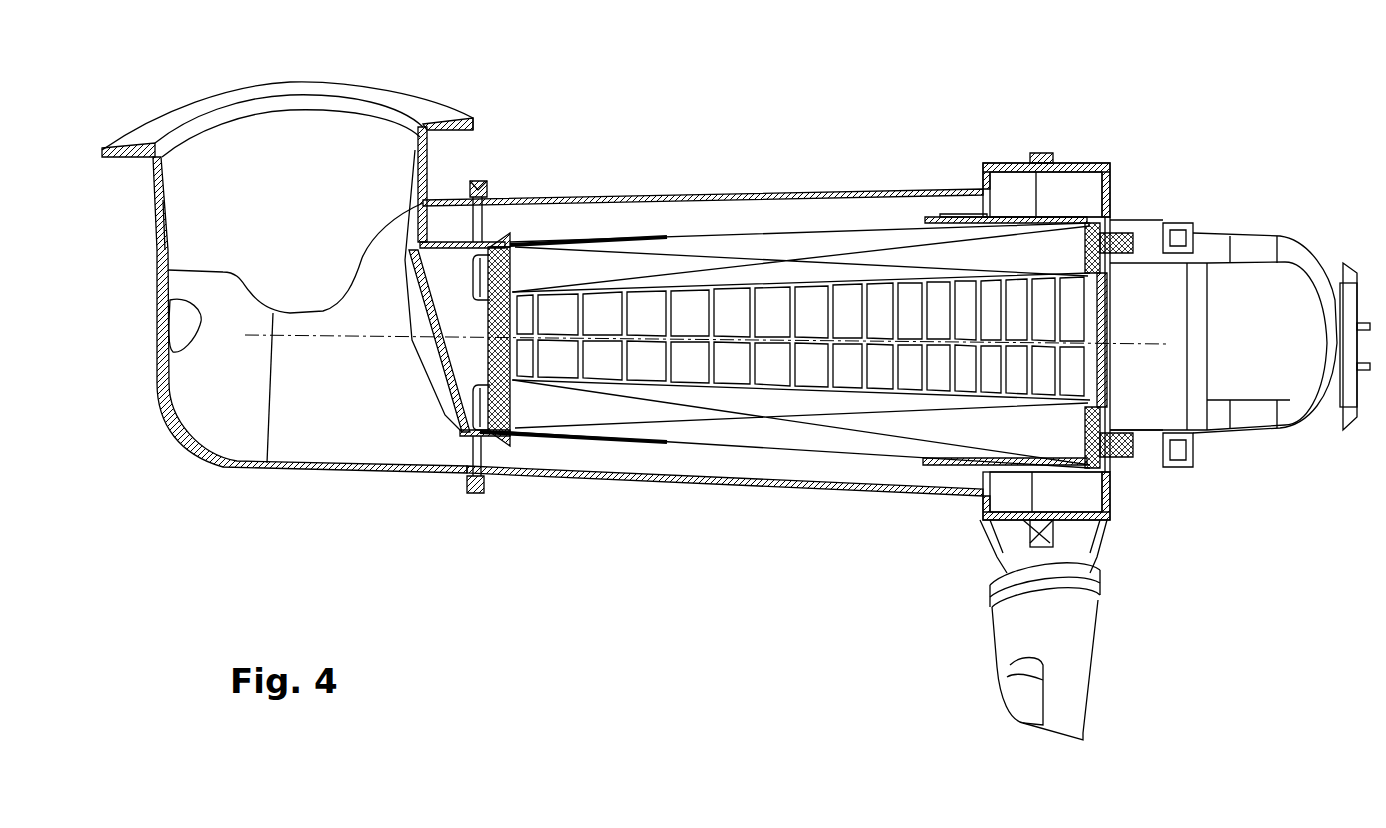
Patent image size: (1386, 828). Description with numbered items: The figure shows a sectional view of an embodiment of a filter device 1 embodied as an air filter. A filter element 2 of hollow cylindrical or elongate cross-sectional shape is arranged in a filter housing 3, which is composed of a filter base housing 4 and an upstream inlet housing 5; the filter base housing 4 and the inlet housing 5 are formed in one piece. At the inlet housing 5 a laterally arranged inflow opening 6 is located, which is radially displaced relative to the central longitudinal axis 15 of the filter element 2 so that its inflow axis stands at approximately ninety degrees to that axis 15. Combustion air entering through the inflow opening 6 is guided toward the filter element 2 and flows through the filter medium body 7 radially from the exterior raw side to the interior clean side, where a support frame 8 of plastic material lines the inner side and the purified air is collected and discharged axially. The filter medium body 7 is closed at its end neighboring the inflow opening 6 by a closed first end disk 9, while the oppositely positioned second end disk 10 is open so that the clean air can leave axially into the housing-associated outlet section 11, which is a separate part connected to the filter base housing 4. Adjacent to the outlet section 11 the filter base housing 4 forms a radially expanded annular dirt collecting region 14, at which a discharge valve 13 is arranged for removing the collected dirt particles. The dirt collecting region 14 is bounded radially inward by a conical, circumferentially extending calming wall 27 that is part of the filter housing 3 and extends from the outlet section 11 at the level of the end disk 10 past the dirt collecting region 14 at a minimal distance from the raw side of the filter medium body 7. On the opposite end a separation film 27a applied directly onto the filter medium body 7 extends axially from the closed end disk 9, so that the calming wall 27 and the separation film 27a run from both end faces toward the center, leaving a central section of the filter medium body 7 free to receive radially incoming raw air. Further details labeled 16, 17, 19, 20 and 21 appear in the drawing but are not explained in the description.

The filter device 1 is at (705, 49).
The filter element 2 is at (595, 240).
The filter housing 3 is at (660, 191).
The filter base housing 4 is at (725, 200).
The inlet housing 5 is at (158, 203).
The inflow opening 6 is at (346, 126).
The filter medium body 7 is at (712, 428).
The support frame 8 is at (767, 343).
The first end disk 9 is at (507, 408).
The second end disk 10 is at (1082, 250).
The outlet section 11 is at (1303, 433).
The discharge valve 13 is at (1083, 650).
The dirt collecting region 14 is at (1083, 517).
The central longitudinal axis 15 is at (373, 337).
The intake duct 16 is at (410, 280).
The clip 17 is at (470, 273).
The flap 19 is at (172, 320).
The groove 20 is at (461, 224).
The latch 21 is at (478, 217).
The calming wall 27 is at (937, 468).
The separation film 27a is at (657, 443).